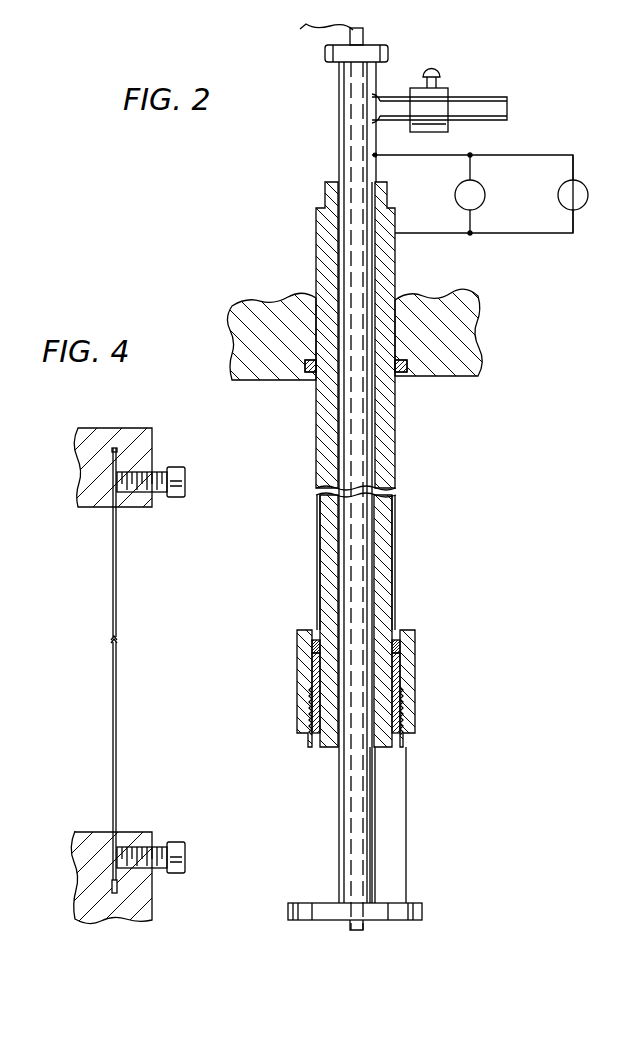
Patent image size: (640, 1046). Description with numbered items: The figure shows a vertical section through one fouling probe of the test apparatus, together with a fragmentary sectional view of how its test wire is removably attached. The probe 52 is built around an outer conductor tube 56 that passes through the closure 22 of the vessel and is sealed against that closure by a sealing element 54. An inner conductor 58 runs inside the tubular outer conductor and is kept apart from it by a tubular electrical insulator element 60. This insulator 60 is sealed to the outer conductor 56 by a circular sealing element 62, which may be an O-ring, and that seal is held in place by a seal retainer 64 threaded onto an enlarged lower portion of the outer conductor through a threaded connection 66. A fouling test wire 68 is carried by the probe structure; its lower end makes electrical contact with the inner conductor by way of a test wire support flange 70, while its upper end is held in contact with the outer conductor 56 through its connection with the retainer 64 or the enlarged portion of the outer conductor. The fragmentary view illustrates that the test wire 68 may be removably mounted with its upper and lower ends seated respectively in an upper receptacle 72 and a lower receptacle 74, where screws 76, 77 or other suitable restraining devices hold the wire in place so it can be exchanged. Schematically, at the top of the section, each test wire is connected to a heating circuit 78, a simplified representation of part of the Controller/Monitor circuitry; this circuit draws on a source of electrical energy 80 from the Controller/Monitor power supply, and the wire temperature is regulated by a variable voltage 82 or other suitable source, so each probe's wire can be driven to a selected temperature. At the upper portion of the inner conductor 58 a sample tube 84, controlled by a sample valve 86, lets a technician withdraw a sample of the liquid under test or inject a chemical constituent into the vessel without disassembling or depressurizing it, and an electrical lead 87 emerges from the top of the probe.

In FIG. 2, the closure 22 is at (467, 320).
In FIG. 2, the probe assembly body 52 is at (300, 208).
In FIG. 2, the sealing element 54 is at (407, 367).
In FIG. 2, the outer conductor tube 56 is at (393, 508).
In FIG. 2, the inner conductor 58 is at (340, 134).
In FIG. 2, the tubular electrical insulator element 60 is at (380, 556).
In FIG. 2, the circular sealing element 62 is at (398, 647).
In FIG. 2, the seal retainer 64 is at (393, 674).
In FIG. 4, the seal retainer 64 is at (137, 434).
In FIG. 2, the threaded connection 66 is at (406, 711).
In FIG. 2, the fouling test wire 68 is at (408, 793).
In FIG. 4, the fouling test wire 68 is at (116, 680).
In FIG. 2, the test wire support flange 70 is at (421, 912).
In FIG. 4, the test wire support flange 70 is at (138, 830).
In FIG. 4, the upper receptacle 72 is at (110, 455).
In FIG. 4, the lower receptacle 74 is at (110, 883).
In FIG. 4, the screw 76 is at (186, 485).
In FIG. 4, the screw 77 is at (186, 864).
In FIG. 2, the heating circuit 78 is at (552, 155).
In FIG. 2, the source of electrical energy 80 is at (486, 201).
In FIG. 2, the variable voltage 82 is at (588, 200).
In FIG. 2, the sample tube 84 is at (505, 108).
In FIG. 2, the sample valve 86 is at (437, 100).
In FIG. 2, the electrical lead 87 is at (363, 34).